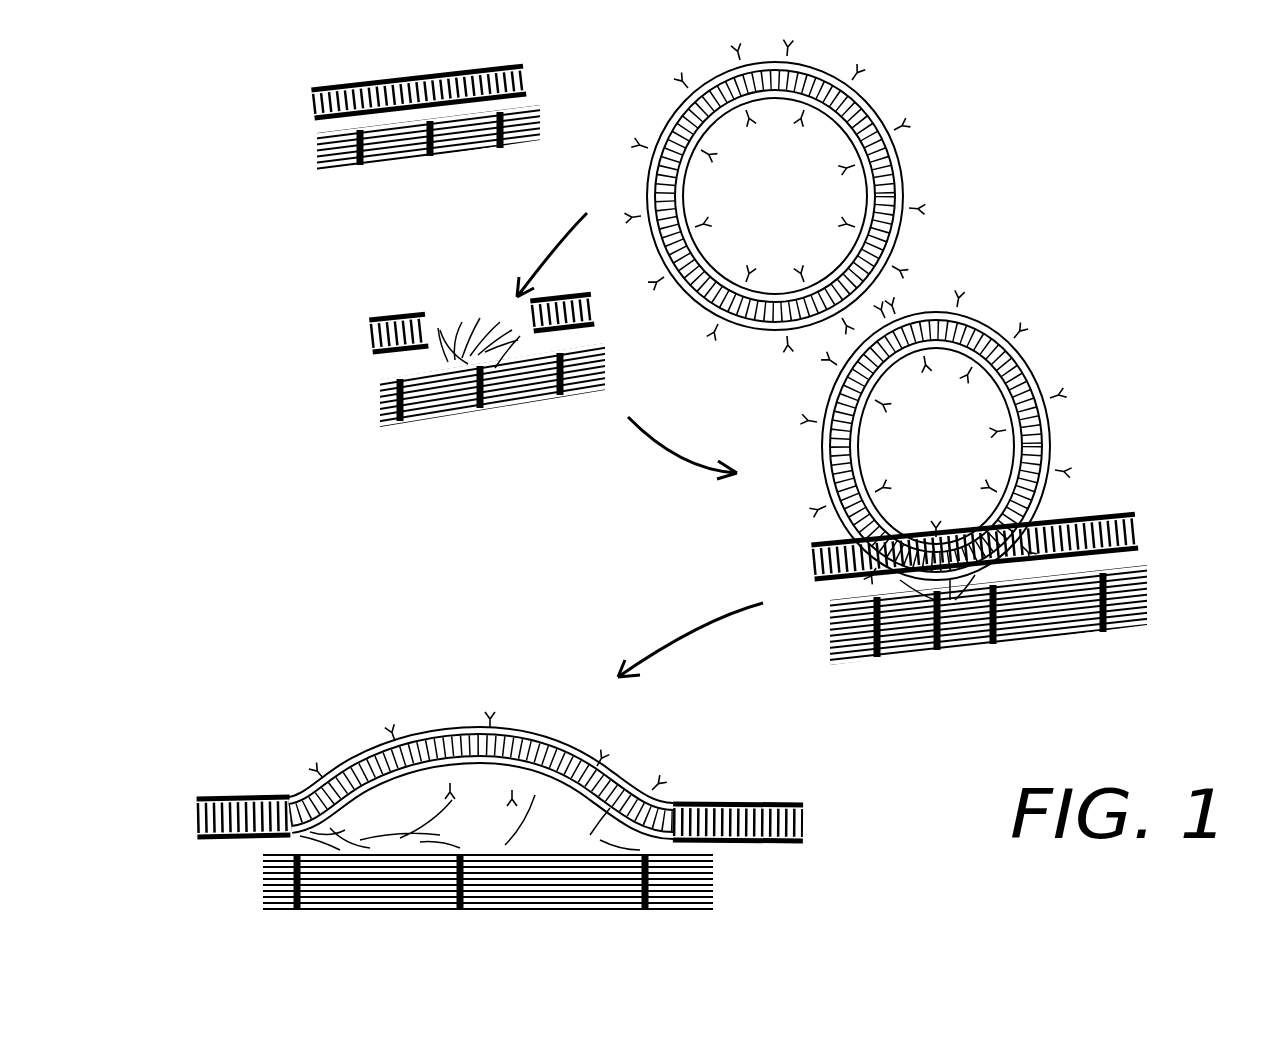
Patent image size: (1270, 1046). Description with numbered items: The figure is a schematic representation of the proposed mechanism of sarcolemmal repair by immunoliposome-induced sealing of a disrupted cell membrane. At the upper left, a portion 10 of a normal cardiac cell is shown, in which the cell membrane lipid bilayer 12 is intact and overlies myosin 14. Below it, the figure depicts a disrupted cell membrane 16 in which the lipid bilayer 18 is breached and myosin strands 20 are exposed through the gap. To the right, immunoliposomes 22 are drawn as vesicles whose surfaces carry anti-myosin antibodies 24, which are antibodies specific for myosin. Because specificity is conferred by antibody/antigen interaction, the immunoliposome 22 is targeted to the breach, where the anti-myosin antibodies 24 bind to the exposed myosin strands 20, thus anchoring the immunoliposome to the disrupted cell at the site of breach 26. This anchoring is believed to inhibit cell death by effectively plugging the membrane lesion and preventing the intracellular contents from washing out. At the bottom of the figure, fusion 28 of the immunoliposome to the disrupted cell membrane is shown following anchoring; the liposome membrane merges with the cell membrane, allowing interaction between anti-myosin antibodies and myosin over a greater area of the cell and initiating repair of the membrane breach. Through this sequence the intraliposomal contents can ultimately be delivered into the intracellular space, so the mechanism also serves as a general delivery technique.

The portion of a normal cardiac cell 10 is at (357, 123).
The cell membrane lipid bilayer 12 is at (330, 88).
The myosin 14 is at (400, 158).
The disrupted cell membrane 16 is at (390, 345).
The lipid bilayer 18 is at (420, 318).
The myosin strands 20 is at (478, 332).
The immunoliposome 22 is at (866, 298).
The anti-myosin antibodies 24 is at (726, 62).
The site of breach 26 is at (1150, 478).
The fusion 28 is at (762, 772).